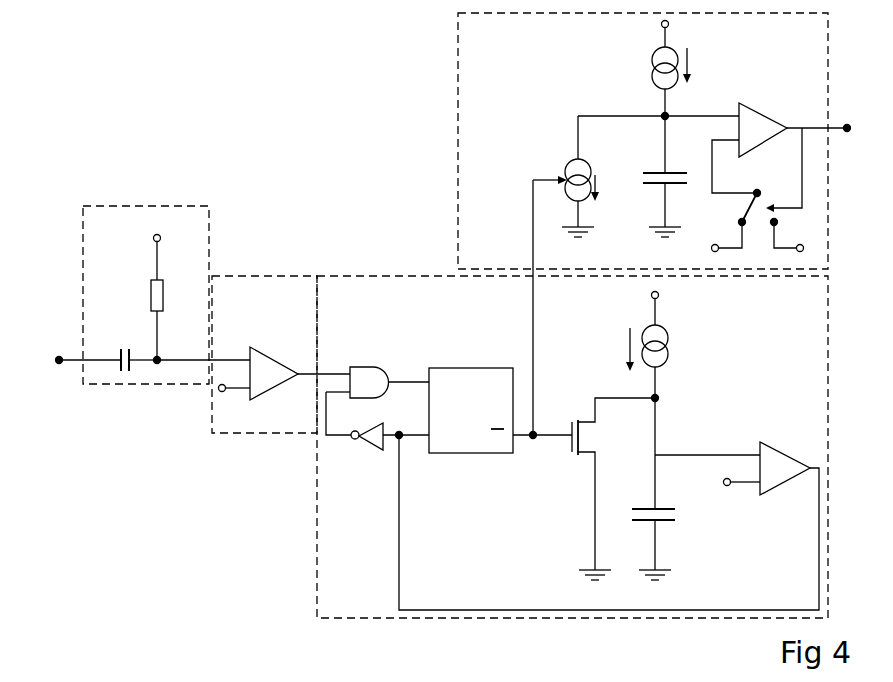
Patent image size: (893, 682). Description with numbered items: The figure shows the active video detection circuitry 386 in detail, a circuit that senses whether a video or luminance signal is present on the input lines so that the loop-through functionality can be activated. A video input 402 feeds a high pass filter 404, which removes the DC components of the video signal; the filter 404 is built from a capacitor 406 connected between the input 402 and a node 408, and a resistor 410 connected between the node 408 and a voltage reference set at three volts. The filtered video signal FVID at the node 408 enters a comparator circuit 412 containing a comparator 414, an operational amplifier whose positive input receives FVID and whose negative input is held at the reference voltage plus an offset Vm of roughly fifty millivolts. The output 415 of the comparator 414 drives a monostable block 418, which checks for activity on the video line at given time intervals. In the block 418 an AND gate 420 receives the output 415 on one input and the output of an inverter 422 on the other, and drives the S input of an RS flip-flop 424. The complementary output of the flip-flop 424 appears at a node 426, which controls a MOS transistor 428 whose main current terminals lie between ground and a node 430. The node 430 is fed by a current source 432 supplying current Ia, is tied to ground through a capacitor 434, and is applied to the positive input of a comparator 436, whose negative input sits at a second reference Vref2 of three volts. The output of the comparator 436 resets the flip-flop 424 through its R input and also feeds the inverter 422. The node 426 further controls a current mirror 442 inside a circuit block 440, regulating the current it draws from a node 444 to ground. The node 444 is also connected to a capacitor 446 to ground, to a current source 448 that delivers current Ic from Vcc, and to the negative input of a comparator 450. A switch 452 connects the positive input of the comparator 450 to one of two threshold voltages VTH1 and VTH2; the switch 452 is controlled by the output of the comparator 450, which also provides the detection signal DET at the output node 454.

The active video detection circuitry 386 is at (121, 68).
The video input 402 is at (59, 364).
The filter 404 is at (112, 205).
The capacitor 406 is at (125, 373).
The node 408 is at (158, 370).
The resistor 410 is at (152, 288).
The comparator circuit 412 is at (240, 283).
The comparator 414 is at (252, 347).
The output 415 is at (305, 372).
The monostable block 418 is at (337, 290).
The AND gate 420 is at (355, 365).
The inverter 422 is at (372, 455).
The RS flip-flop 424 is at (468, 383).
The node 426 is at (535, 448).
The transistor 428 is at (585, 415).
The node 430 is at (677, 397).
The current source 432 is at (668, 338).
The capacitor 434 is at (638, 507).
The comparator 436 is at (786, 455).
The circuit block 440 is at (458, 98).
The current mirror 442 is at (575, 160).
The node 444 is at (662, 114).
The capacitor 446 is at (690, 172).
The current source 448 is at (680, 52).
The comparator 450 is at (752, 112).
The switch 452 is at (760, 205).
The output node 454 is at (847, 122).